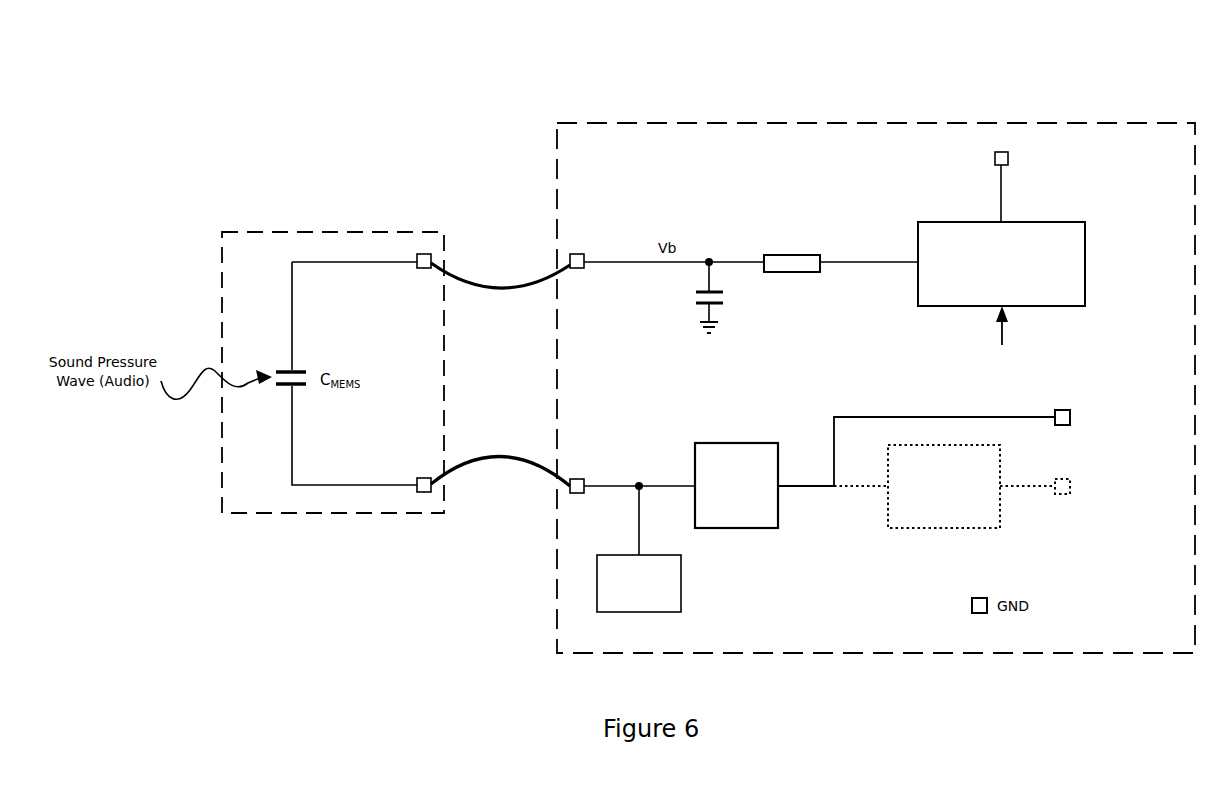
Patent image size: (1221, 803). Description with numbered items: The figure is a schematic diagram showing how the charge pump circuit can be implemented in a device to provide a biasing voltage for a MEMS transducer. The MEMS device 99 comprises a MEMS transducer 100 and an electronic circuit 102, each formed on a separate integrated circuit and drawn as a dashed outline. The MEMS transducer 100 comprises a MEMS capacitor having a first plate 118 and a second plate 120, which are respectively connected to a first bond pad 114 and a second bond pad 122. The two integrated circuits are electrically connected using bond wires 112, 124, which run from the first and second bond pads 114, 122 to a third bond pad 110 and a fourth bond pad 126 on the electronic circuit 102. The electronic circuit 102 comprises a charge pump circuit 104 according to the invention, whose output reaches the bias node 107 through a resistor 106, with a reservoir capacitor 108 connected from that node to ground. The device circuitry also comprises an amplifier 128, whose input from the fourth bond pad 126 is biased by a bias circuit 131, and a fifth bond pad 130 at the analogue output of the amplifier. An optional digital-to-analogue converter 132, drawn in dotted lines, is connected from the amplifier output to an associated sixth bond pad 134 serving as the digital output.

The MEMS device 99 is at (257, 80).
The MEMS transducer 100 is at (243, 218).
The electronic circuit 102 is at (974, 122).
The charge pump circuit 104 is at (1087, 247).
The resistor 106 is at (814, 247).
The bias node Vb 107 is at (703, 247).
The reservoir capacitor 108 is at (688, 297).
The third bond pad 110 is at (580, 242).
The bond wire 112 is at (487, 228).
The first bond pad 114 is at (424, 253).
The first plate 118 is at (297, 367).
The second plate 120 is at (278, 405).
The second bond pad 122 is at (423, 477).
The bond wire 124 is at (500, 450).
The fourth bond pad 126 is at (573, 472).
The amplifier 128 is at (760, 537).
The fifth bond pad 130 is at (1068, 405).
The bias circuit 131 is at (693, 580).
The digital-to-analogue converter 132 is at (947, 533).
The sixth bond pad 134 is at (1068, 475).